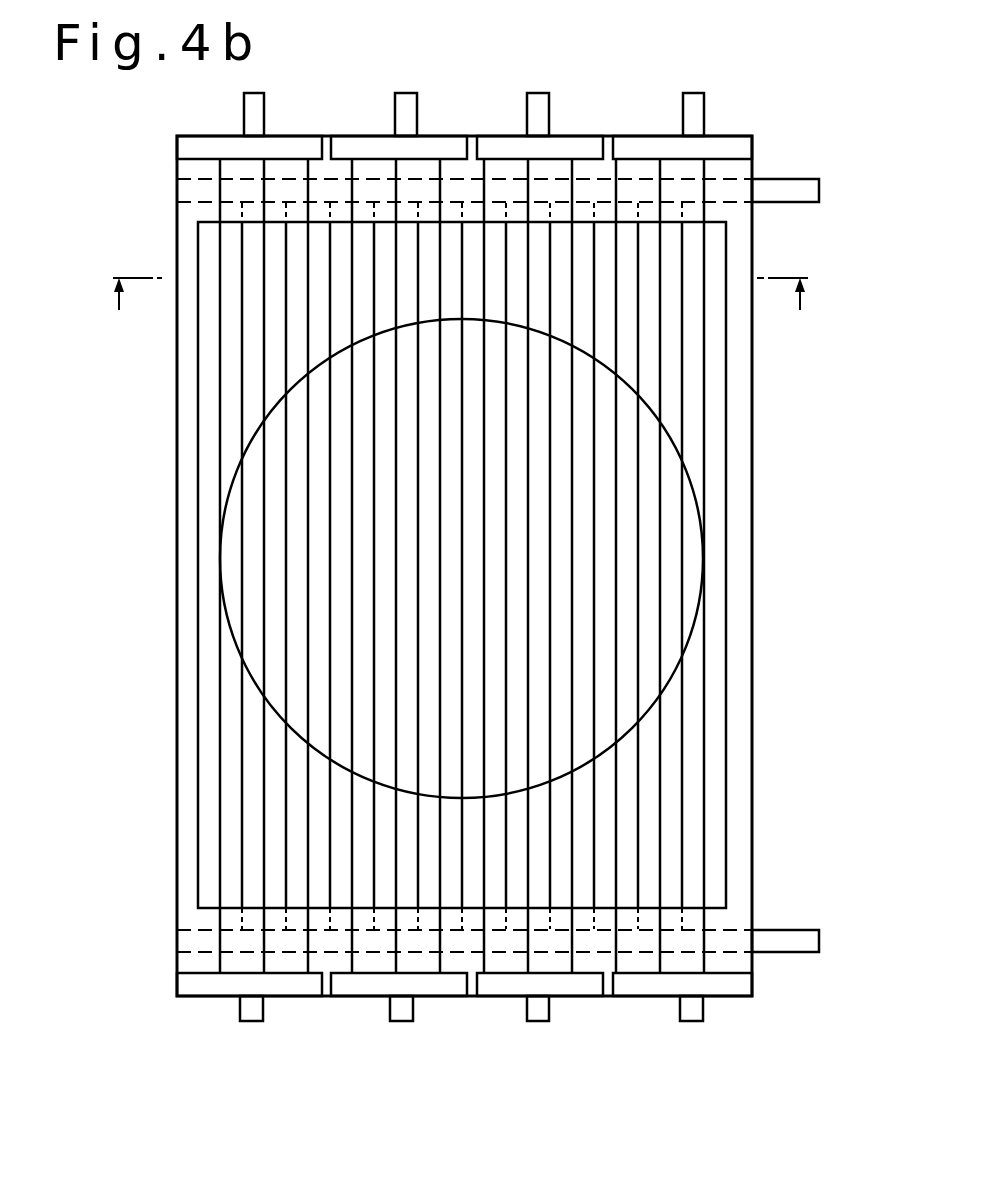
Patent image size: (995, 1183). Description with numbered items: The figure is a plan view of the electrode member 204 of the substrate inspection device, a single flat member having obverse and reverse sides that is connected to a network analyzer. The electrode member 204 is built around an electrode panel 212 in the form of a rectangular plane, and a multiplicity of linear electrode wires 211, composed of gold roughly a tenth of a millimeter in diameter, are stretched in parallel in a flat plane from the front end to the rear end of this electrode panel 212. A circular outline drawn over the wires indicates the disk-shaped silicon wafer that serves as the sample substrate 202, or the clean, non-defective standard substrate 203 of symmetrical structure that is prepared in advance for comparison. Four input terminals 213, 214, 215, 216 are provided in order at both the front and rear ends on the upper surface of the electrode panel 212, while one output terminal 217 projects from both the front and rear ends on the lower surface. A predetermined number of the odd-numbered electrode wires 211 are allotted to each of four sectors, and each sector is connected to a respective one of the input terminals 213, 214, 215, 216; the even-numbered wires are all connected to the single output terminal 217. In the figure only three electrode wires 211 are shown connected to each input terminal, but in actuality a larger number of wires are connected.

The electrode member 204 is at (817, 98).
The sample substrate 202 is at (551, 558).
The standard substrate 203 is at (690, 640).
The electrode wires 211 is at (683, 808).
The electrode panel 212 is at (737, 549).
The input terminal 213 is at (703, 93).
The input terminal 214 is at (548, 93).
The input terminal 215 is at (416, 93).
The input terminal 216 is at (263, 93).
The output terminal 217 is at (778, 185).